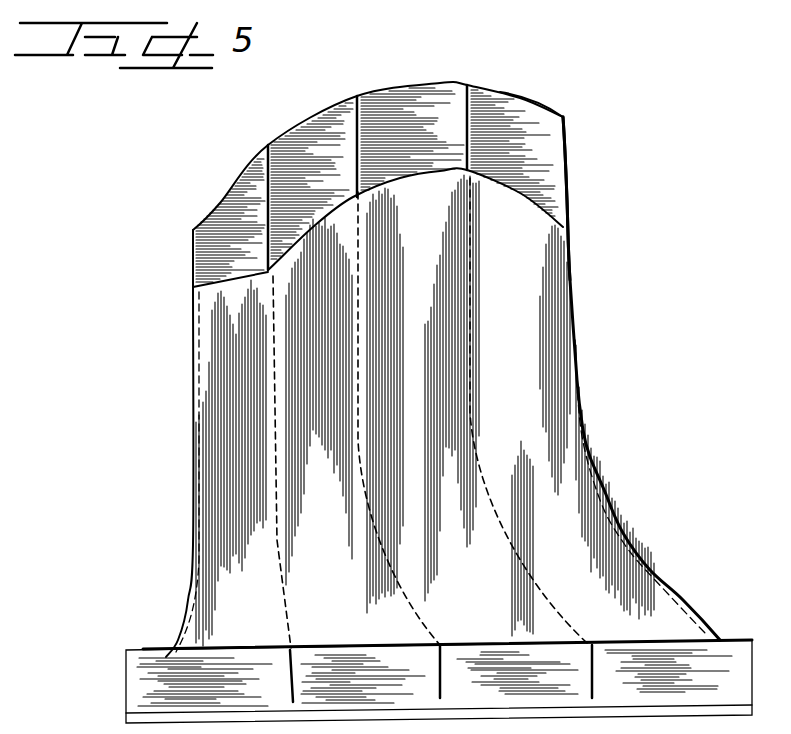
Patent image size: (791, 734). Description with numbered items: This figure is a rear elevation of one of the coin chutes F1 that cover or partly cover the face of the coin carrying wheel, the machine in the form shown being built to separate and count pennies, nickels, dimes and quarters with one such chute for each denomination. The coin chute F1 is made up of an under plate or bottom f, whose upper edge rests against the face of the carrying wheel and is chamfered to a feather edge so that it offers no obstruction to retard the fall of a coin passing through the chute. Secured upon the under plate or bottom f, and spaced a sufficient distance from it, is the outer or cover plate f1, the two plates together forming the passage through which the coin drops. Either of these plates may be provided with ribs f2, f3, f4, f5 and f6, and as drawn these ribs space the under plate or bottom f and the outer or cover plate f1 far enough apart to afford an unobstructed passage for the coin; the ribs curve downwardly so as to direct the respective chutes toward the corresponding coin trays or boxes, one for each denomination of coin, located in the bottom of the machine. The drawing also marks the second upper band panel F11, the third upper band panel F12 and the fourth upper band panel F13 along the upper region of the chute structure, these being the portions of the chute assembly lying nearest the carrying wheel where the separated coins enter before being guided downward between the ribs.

The under plate or bottom f is at (540, 270).
The coin chute F1 is at (233, 200).
The second upper band panel F11 is at (313, 147).
The third upper band panel F12 is at (432, 105).
The fourth upper band panel F13 is at (525, 120).
The outer or cover plate f1 is at (552, 112).
The rib f2 is at (192, 238).
The rib f3 is at (267, 157).
The rib f4 is at (372, 115).
The rib f5 is at (472, 102).
The rib f6 is at (568, 165).